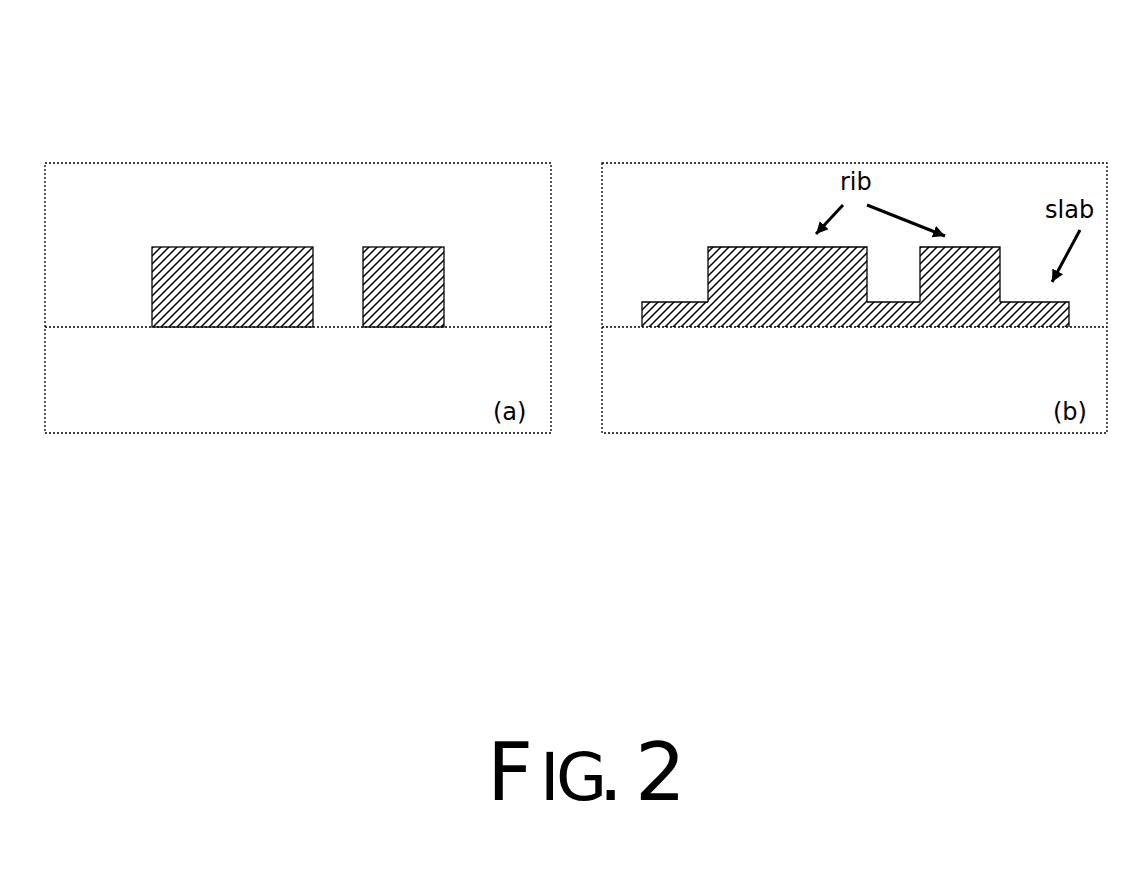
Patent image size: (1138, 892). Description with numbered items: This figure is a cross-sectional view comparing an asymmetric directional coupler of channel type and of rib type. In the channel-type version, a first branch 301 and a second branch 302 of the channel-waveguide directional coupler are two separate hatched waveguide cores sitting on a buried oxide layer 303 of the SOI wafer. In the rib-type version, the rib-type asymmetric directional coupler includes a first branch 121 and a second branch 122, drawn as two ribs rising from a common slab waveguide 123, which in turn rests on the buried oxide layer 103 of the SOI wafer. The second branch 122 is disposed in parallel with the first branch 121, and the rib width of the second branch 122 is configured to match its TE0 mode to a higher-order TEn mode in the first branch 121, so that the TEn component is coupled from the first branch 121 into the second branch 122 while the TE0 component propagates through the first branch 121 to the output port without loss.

The 1st branch of channel-waveguide directional coupler 301 is at (210, 308).
The 2nd branch of channel-waveguide directional coupler 302 is at (430, 308).
The buried oxide layer of SOI wafer 303 is at (316, 405).
The first branch 121 is at (757, 263).
The second branch 122 is at (973, 257).
The slab waveguide 123 is at (1022, 309).
The buried oxide layer of SOI wafer 103 is at (1020, 403).